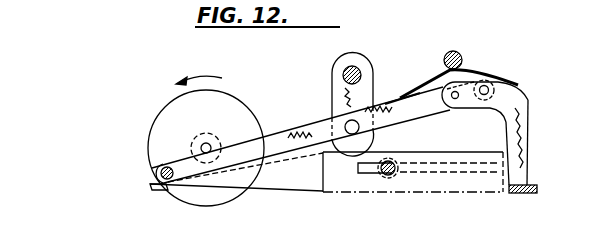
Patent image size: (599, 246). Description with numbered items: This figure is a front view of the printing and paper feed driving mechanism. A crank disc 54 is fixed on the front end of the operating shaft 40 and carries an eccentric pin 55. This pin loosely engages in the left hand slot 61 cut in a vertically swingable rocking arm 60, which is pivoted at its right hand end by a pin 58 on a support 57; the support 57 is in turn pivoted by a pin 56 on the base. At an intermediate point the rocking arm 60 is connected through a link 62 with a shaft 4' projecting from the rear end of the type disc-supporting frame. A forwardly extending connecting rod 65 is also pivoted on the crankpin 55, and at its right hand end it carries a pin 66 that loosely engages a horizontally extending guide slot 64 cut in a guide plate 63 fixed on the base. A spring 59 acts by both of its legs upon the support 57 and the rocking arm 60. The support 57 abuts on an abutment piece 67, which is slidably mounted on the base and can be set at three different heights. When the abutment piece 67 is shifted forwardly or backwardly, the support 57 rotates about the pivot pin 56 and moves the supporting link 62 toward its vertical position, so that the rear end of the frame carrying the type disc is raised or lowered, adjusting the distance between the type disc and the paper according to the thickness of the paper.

The crank disc 54 is at (232, 107).
The operating shaft 40 is at (196, 147).
The left hand slot 61 is at (250, 146).
The rocking arm 60 is at (302, 140).
The eccentric pin 55 is at (160, 178).
The connecting rod 65 is at (284, 166).
The guide plate 63 is at (447, 184).
The guide slot 64 is at (417, 173).
The pin 66 is at (383, 174).
The link 62 is at (338, 95).
The shaft 4' is at (328, 72).
The pin 56 is at (456, 100).
The pin 58 is at (493, 92).
The spring 59 is at (483, 68).
The support 57 is at (522, 150).
The abutment piece 67 is at (516, 194).